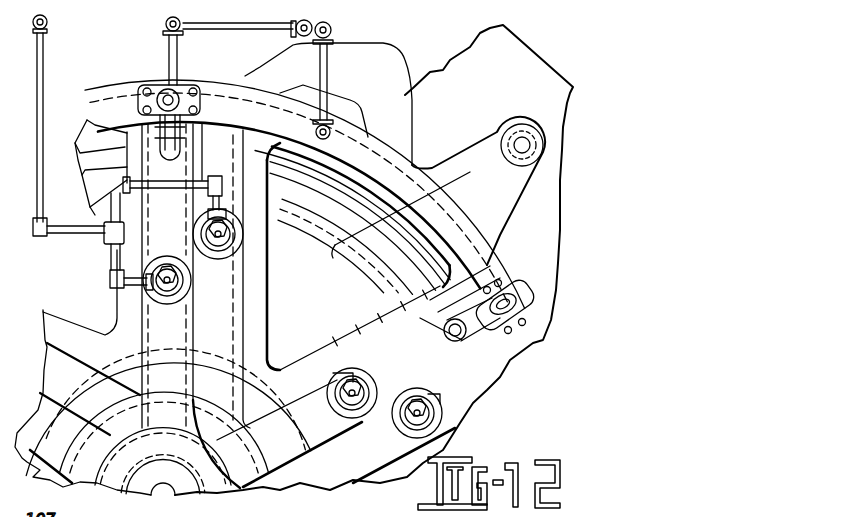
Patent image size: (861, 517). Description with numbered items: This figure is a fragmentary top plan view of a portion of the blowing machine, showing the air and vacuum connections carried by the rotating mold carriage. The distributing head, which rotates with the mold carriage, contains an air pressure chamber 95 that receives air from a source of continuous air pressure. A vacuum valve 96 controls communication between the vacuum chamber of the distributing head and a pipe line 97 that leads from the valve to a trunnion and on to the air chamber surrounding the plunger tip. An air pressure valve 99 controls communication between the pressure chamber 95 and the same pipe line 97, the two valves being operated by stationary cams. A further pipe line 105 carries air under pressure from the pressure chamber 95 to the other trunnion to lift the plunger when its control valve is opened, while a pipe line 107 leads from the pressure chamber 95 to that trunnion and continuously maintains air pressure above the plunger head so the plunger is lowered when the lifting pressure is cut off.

The air pressure chamber 95 is at (390, 168).
The vacuum valve 96 is at (150, 290).
The pipe line 97 is at (37, 82).
The air pressure valve 99 is at (242, 258).
The pipe line 105 is at (253, 30).
The pipe line 107 is at (327, 67).